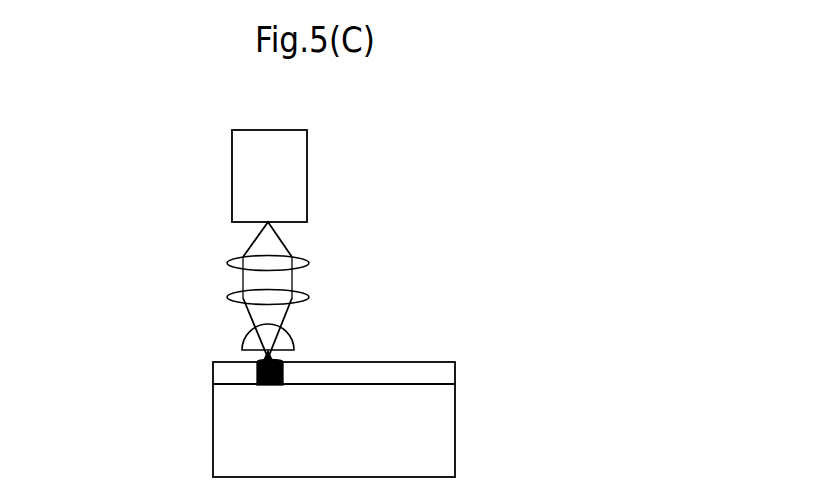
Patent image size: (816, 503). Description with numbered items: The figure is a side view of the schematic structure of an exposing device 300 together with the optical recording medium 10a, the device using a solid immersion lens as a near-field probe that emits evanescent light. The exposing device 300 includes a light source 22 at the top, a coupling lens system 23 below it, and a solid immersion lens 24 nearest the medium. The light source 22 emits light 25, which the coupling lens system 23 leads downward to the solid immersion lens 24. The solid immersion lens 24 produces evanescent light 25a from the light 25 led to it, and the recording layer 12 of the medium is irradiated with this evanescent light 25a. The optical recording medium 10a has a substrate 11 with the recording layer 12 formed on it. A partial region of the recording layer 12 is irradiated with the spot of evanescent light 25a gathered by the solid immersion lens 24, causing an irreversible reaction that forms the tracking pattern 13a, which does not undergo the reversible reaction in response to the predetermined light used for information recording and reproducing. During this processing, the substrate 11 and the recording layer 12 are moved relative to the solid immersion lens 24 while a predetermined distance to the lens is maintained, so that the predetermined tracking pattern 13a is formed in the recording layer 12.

The exposing device 300 is at (208, 228).
The light source 22 is at (232, 185).
The coupling lens system 23 is at (310, 246).
The light 25 is at (293, 278).
The solid immersion lens 24 is at (293, 332).
The evanescent light 25a is at (277, 359).
The tracking pattern 13a is at (257, 372).
The optical recording medium 10a is at (203, 360).
The recording layer 12 is at (440, 373).
The substrate 11 is at (442, 422).